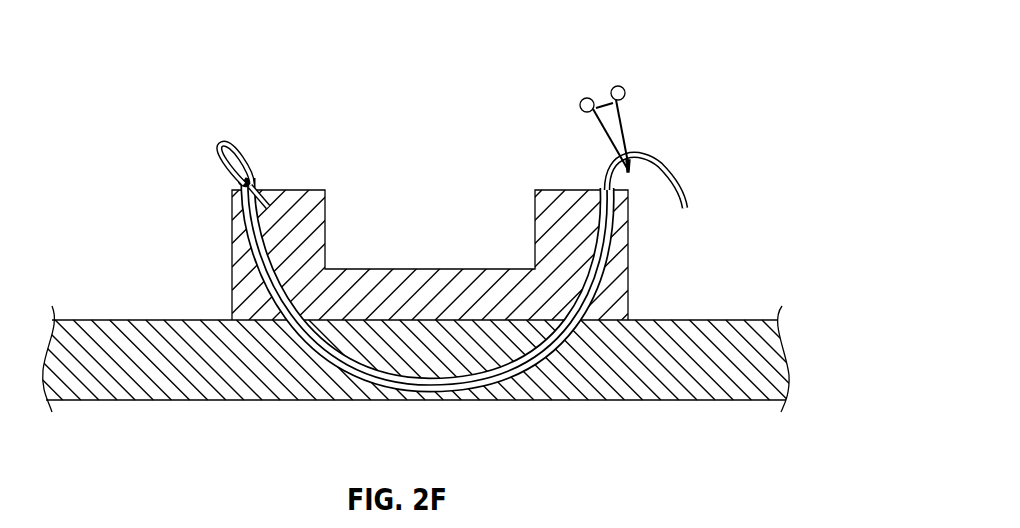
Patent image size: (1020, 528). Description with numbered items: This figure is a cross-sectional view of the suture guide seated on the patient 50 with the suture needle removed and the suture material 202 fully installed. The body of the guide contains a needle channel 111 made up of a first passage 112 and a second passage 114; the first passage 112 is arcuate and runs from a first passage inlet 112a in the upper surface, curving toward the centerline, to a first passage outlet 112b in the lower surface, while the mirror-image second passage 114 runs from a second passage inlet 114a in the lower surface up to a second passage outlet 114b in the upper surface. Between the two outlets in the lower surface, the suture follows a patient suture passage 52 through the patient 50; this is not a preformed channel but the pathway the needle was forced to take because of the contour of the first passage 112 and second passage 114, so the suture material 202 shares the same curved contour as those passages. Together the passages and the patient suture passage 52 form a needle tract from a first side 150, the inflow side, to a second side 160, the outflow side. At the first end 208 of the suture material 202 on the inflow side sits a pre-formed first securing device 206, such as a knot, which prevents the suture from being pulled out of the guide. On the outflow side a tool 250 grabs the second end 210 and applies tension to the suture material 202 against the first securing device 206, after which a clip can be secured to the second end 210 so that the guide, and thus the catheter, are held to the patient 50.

The patient 50 is at (718, 386).
The patient suture passage 52 is at (503, 380).
The needle channel 111 is at (240, 229).
The first passage 112 is at (260, 276).
The first passage inlet 112a is at (234, 187).
The first passage outlet 112b is at (287, 325).
The second passage 114 is at (608, 270).
The second passage inlet 114a is at (559, 347).
The second passage outlet 114b is at (601, 190).
The first side 150 is at (225, 141).
The second side 160 is at (646, 149).
The suture material 202 is at (614, 158).
The first securing device 206 is at (253, 176).
The first end 208 is at (209, 134).
The second end 210 is at (636, 156).
The tool 250 is at (581, 100).